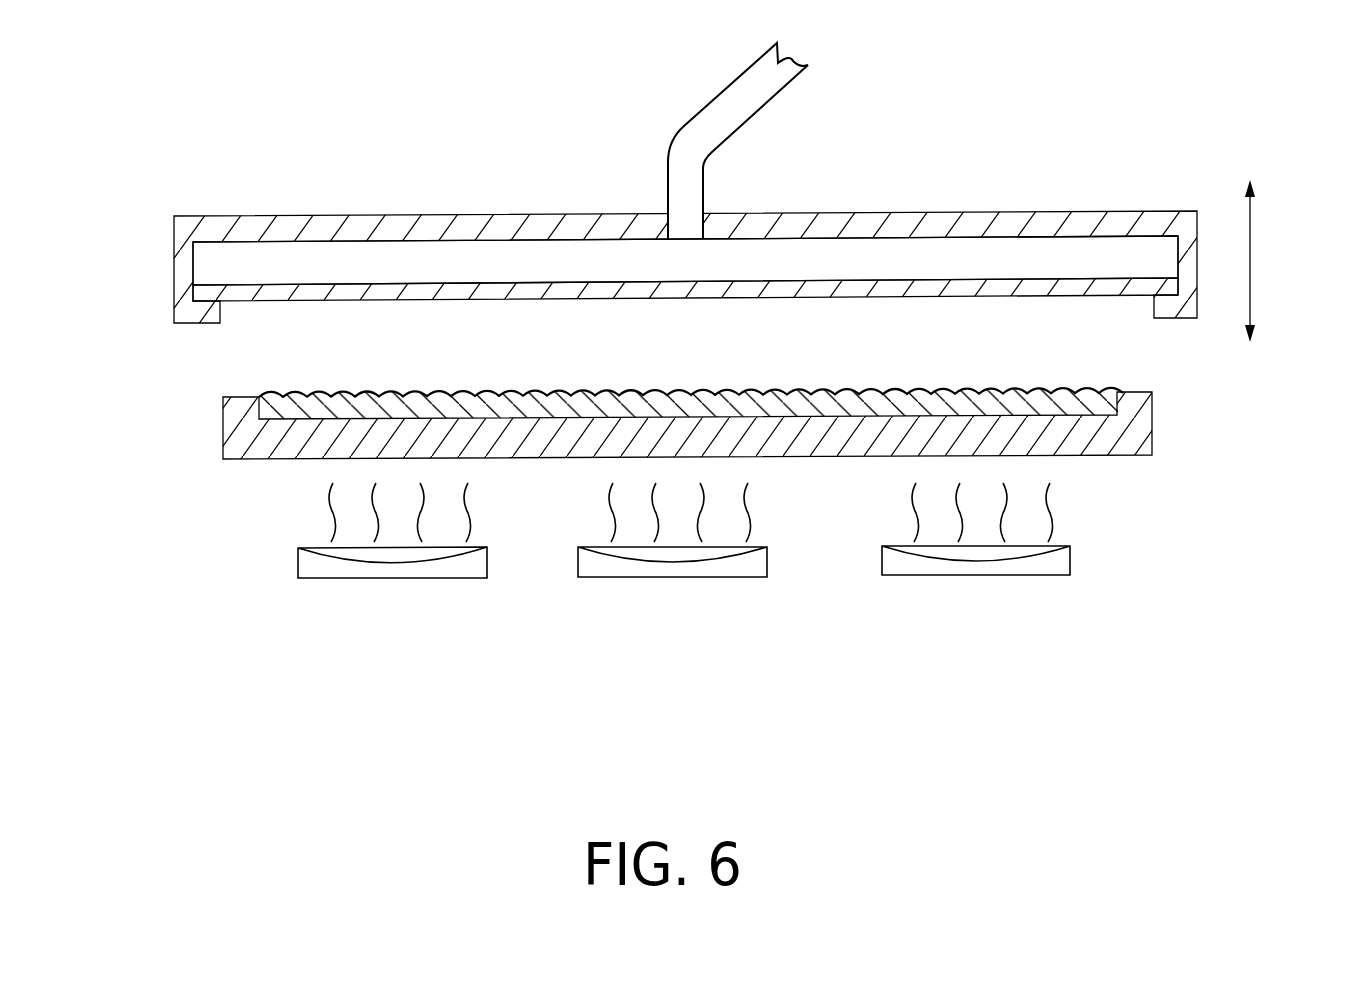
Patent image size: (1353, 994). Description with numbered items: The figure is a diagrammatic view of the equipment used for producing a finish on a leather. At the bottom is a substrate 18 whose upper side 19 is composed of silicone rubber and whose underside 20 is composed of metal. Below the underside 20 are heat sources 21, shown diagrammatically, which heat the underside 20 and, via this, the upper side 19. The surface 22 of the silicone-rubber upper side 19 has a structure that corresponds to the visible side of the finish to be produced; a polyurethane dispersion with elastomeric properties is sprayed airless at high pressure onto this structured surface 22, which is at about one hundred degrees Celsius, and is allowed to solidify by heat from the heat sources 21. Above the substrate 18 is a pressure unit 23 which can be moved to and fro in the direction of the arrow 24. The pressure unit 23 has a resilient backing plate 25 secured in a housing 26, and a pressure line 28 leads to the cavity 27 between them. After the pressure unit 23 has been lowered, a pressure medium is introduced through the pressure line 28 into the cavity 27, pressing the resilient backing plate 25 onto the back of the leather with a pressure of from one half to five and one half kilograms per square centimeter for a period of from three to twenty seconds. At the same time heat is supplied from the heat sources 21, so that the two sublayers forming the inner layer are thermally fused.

The substrate 18 is at (1185, 427).
The upper side 19 is at (796, 395).
The underside 20 is at (778, 460).
The heat sources 21 is at (382, 570).
The surface 22 is at (372, 398).
The pressure unit 23 is at (742, 183).
The arrow 24 is at (1250, 278).
The resilient backing plate 25 is at (1078, 285).
The housing 26 is at (870, 225).
The cavity 27 is at (228, 265).
The pressure line 28 is at (710, 116).